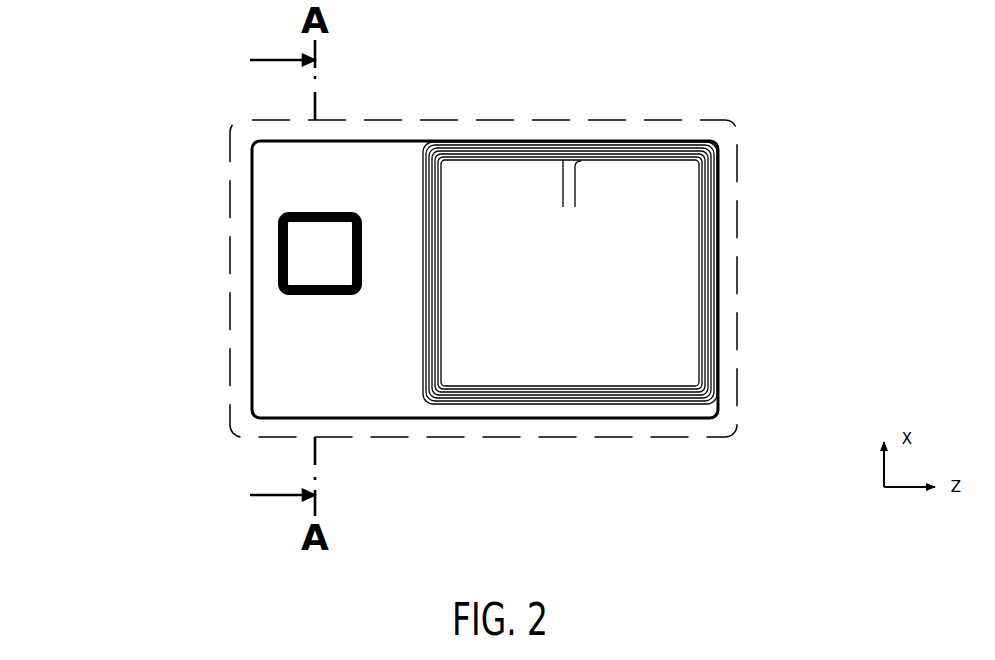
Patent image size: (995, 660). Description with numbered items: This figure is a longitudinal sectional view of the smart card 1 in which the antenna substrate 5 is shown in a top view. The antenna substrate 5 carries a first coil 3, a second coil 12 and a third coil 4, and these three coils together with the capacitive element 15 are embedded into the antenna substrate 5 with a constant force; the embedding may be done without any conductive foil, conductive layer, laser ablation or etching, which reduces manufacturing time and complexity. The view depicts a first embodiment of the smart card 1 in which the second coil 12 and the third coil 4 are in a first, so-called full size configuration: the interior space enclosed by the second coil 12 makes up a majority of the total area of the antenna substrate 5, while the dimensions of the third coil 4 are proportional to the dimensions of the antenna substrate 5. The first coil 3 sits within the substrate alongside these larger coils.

The smart card 1 is at (120, 151).
The first coil 3 is at (280, 252).
The third coil 4 is at (252, 370).
The antenna substrate 5 is at (737, 372).
The second coil 12 is at (527, 388).
The capacitive element 15 is at (580, 191).